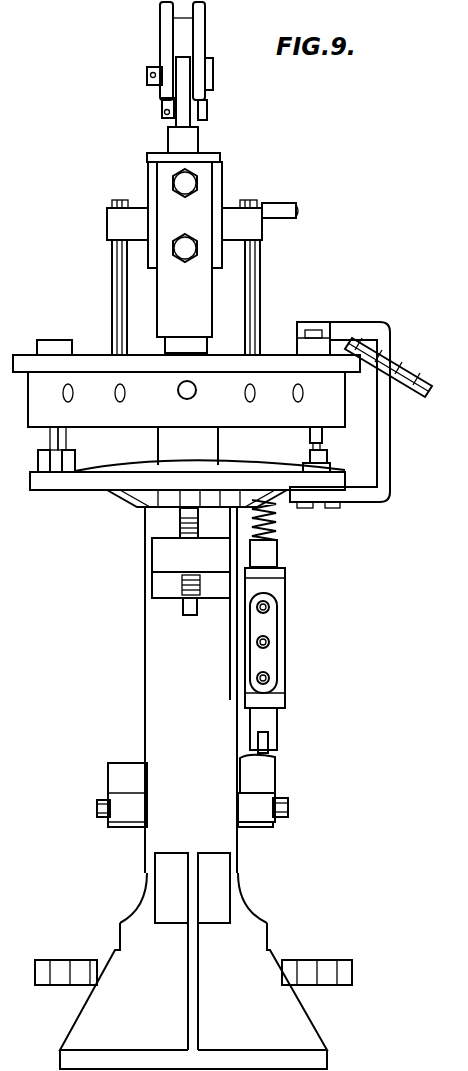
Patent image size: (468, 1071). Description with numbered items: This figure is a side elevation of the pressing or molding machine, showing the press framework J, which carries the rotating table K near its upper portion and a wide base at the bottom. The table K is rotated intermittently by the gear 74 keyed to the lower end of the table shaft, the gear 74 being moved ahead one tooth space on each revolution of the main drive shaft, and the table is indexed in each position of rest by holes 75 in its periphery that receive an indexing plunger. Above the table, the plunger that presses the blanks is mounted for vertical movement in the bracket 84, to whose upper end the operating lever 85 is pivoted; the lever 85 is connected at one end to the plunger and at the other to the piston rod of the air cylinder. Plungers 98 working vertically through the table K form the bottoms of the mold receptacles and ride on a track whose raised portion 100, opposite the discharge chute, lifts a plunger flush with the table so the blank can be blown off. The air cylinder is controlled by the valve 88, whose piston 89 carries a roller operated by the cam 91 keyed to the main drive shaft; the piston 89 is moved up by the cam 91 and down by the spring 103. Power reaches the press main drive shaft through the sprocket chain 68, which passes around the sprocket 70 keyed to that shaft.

The operating lever 85 is at (160, 15).
The bracket 84 is at (205, 195).
The rotating table K is at (100, 384).
The holes 75 is at (190, 396).
The plungers 98 is at (50, 440).
The portion of track 100 is at (128, 469).
The spring 103 is at (276, 523).
The air valve piston 89 is at (272, 557).
The valve 88 is at (286, 636).
The framework J is at (155, 678).
The cam 91 is at (262, 770).
The sprocket chain 68 is at (290, 806).
The sprocket 70 is at (262, 828).
The gear 74 is at (352, 970).